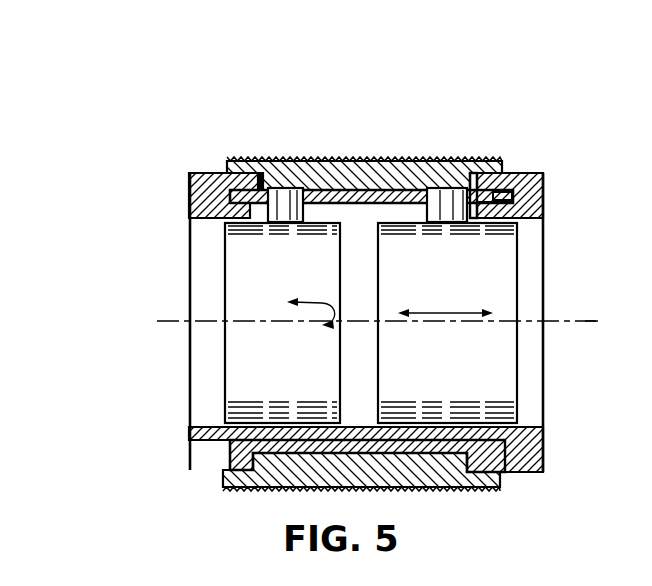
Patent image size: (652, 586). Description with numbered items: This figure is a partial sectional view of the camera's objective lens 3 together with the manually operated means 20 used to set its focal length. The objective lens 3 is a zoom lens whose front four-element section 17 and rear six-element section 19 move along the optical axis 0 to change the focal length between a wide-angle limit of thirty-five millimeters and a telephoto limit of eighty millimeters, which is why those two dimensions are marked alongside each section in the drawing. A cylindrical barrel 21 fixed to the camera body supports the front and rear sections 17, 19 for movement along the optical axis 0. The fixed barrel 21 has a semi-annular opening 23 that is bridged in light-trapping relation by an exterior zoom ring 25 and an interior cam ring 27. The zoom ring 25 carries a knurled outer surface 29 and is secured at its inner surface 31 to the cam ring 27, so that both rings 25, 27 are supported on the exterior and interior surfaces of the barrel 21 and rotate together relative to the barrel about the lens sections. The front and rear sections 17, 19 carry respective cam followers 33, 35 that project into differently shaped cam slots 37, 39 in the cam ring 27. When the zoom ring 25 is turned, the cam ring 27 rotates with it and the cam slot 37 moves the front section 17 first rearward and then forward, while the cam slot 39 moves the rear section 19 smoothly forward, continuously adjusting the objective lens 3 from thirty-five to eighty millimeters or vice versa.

The manually operated means 20 is at (291, 114).
The objective lens 3 is at (172, 310).
The optical axis 0 is at (598, 321).
The zoom ring 25 is at (390, 175).
The inner surface 31 is at (345, 159).
The knurled outer surface 29 is at (437, 158).
The cam slot 39 is at (463, 158).
The cam slot 37 is at (300, 186).
The semi-annular opening 23 is at (320, 200).
The cylindrical barrel 21 is at (190, 198).
The cam ring 27 is at (228, 175).
The cam follower 33 is at (288, 214).
The cam follower 35 is at (447, 214).
The front four-element section 17 is at (225, 393).
The rear six-element section 19 is at (378, 392).